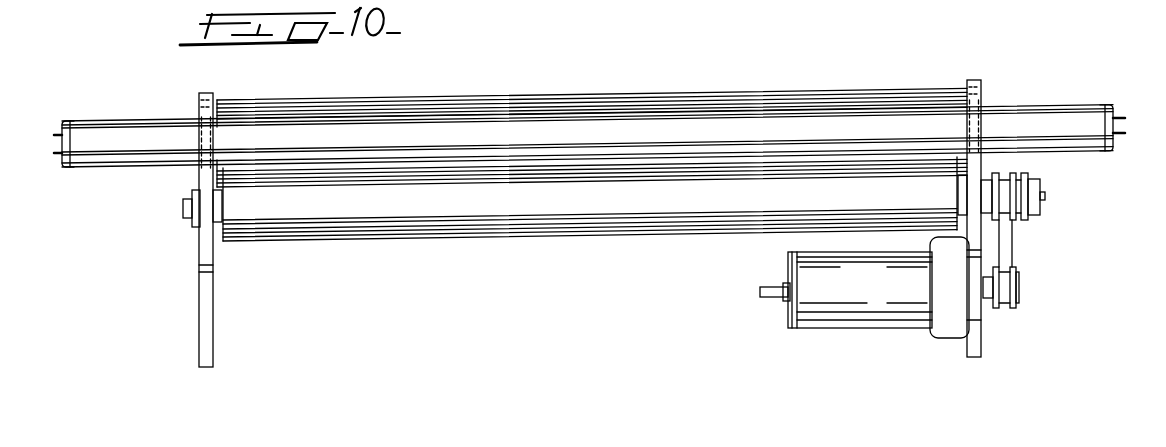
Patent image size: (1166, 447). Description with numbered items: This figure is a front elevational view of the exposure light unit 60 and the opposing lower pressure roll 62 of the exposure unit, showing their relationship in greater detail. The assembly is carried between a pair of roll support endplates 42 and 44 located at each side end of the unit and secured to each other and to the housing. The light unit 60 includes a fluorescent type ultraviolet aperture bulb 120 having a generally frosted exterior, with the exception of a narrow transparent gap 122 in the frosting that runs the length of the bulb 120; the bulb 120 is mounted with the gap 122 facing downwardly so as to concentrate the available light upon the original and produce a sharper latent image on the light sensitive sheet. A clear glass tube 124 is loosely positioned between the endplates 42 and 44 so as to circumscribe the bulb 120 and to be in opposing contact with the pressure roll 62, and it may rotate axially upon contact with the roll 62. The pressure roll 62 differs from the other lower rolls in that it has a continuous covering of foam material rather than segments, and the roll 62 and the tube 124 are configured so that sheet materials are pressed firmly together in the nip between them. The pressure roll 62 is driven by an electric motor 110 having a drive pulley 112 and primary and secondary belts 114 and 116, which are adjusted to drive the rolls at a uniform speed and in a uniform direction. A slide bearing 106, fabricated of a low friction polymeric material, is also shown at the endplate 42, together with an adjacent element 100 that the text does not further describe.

The roll support endplate 42 is at (207, 331).
The roll support endplate 44 is at (975, 347).
The exposure light unit 60 is at (592, 108).
The lower pressure roll 62 is at (600, 226).
The bearing 100 is at (185, 218).
The slide bearing 106 is at (194, 228).
The electric motor 110 is at (841, 322).
The drive pulley 112 is at (1018, 305).
The primary belt 114 is at (1004, 240).
The secondary belt 116 is at (1030, 186).
The ultraviolet aperture bulb 120 is at (1020, 112).
The transparent gap 122 is at (1092, 149).
The clear glass tube 124 is at (257, 100).